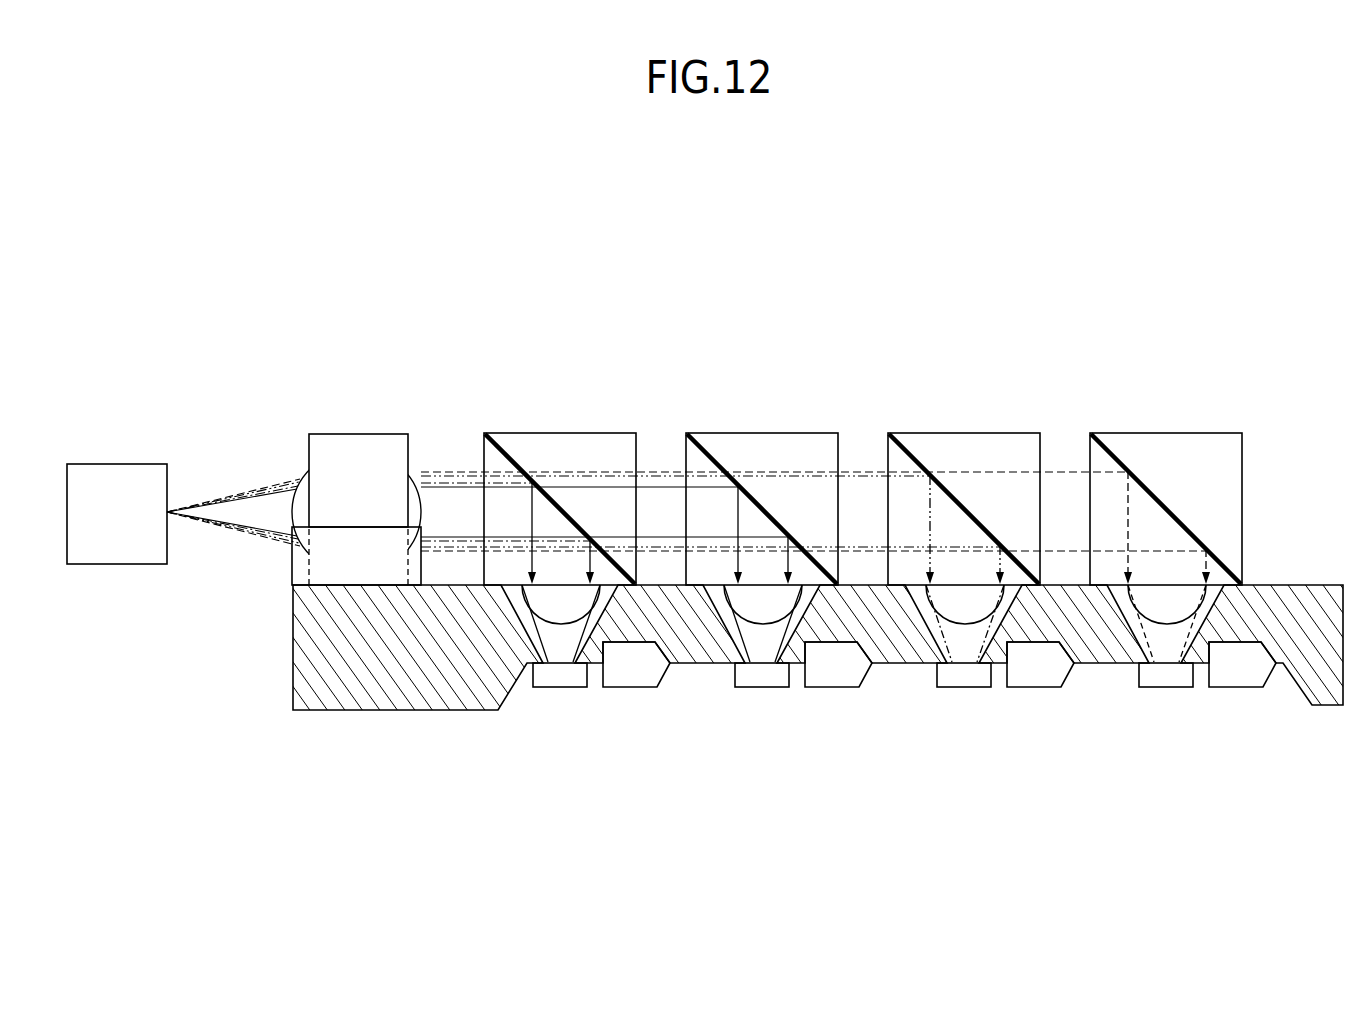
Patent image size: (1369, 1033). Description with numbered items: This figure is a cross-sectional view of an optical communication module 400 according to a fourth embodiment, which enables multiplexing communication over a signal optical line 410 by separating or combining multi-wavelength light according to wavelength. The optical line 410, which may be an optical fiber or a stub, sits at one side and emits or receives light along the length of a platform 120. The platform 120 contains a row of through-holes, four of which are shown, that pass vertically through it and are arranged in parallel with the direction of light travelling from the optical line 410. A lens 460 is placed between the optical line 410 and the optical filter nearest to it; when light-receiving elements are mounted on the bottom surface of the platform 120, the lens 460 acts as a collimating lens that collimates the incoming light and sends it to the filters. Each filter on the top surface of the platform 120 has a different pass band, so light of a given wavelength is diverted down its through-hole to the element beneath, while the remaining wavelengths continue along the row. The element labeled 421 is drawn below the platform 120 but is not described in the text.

The light source unit 400 is at (234, 414).
The light source 410 is at (112, 567).
The collimating lens 460 is at (353, 433).
The substrate 120 is at (370, 745).
The wiring 421 is at (672, 666).